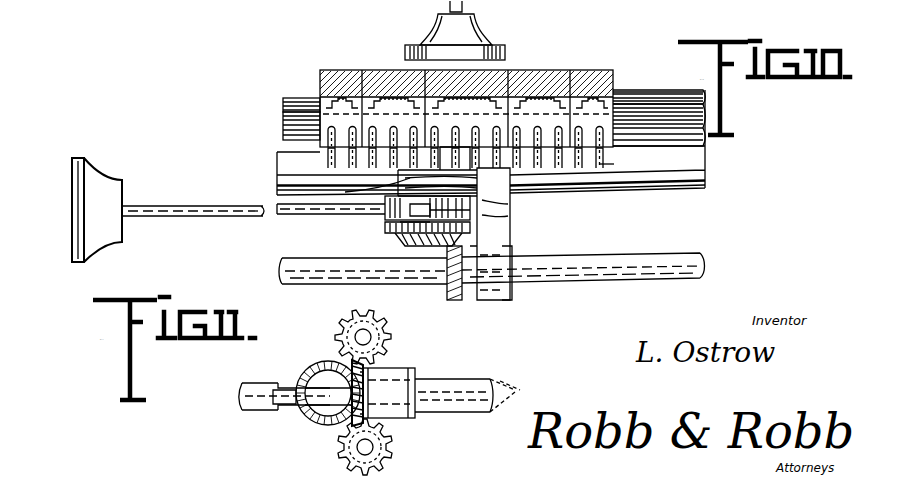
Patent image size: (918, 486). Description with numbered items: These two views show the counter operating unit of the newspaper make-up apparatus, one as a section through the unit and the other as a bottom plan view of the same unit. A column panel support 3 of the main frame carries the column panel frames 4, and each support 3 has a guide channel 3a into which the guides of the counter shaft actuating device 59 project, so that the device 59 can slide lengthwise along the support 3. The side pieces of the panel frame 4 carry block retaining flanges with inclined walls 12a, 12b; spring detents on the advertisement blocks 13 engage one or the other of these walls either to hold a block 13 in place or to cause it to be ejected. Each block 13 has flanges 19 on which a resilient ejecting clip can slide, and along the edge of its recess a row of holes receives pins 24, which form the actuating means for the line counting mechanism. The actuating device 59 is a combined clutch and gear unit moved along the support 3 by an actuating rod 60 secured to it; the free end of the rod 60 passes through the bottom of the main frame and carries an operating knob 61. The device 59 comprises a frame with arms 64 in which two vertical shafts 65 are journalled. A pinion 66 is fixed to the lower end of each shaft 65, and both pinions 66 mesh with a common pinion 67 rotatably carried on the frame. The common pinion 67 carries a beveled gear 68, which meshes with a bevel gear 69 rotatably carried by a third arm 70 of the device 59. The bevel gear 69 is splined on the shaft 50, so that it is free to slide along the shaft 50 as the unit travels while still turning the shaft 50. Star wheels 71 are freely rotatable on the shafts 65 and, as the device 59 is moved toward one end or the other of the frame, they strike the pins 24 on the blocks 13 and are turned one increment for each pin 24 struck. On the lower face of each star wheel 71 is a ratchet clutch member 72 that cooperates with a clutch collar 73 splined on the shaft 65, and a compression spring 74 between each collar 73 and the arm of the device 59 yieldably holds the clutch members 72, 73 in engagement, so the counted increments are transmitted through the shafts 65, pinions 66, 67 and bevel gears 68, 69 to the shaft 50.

In FIG. 10, the column panel support 3 is at (706, 166).
In FIG. 11, the column panel support 3 is at (500, 363).
In FIG. 10, the guide channel 3a is at (706, 184).
In FIG. 11, the guide channel 3a is at (513, 391).
In FIG. 10, the column panel frame 4 is at (665, 96).
In FIG. 10, the inclined wall 12a is at (706, 80).
In FIG. 10, the inclined wall 12b is at (692, 122).
In FIG. 10, the block 13 is at (595, 48).
In FIG. 10, the flange 19 is at (612, 62).
In FIG. 10, the pin 24 is at (612, 162).
In FIG. 10, the shaft 50 is at (590, 282).
In FIG. 11, the shaft 50 is at (445, 379).
In FIG. 10, the counter shaft actuating device 59 is at (470, 206).
In FIG. 10, the actuating rod 60 is at (242, 194).
In FIG. 10, the operating knob 61 is at (104, 188).
In FIG. 10, the arm 64 is at (502, 214).
In FIG. 11, the vertical shaft 65 is at (408, 440).
In FIG. 10, the pinion 66 is at (470, 216).
In FIG. 11, the pinion 66 is at (400, 468).
In FIG. 10, the common pinion 67 is at (385, 226).
In FIG. 11, the common pinion 67 is at (318, 376).
In FIG. 10, the beveled gear 68 is at (400, 244).
In FIG. 11, the beveled gear 68 is at (314, 418).
In FIG. 10, the bevel gear 69 is at (455, 302).
In FIG. 11, the bevel gear 69 is at (396, 409).
In FIG. 10, the third arm 70 is at (512, 236).
In FIG. 11, the third arm 70 is at (398, 368).
In FIG. 10, the star wheel 71 is at (470, 176).
In FIG. 10, the ratchet clutch member 72 is at (342, 172).
In FIG. 10, the clutch collar 73 is at (298, 226).
In FIG. 10, the compression spring 74 is at (610, 210).